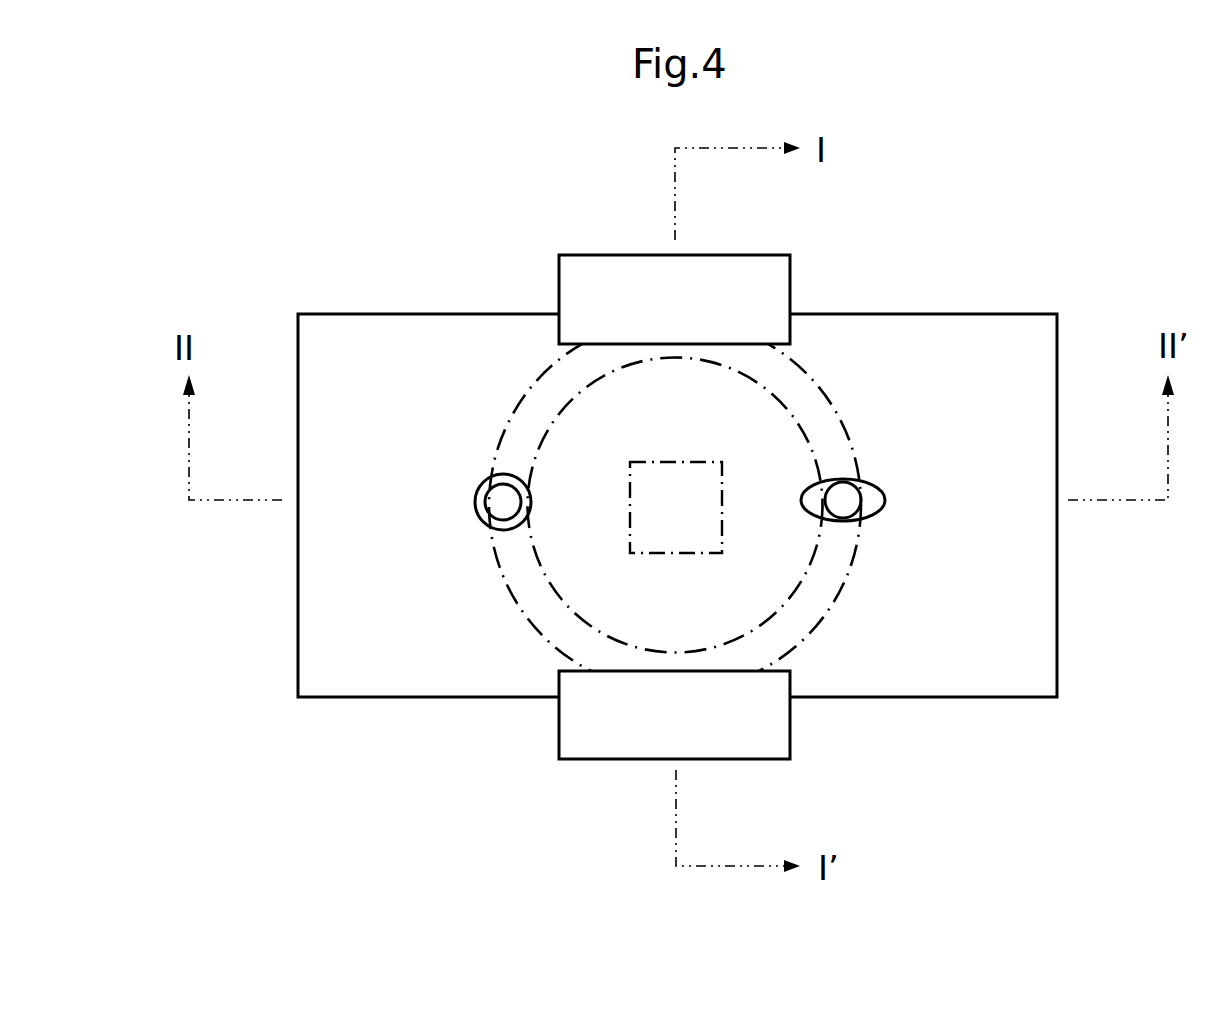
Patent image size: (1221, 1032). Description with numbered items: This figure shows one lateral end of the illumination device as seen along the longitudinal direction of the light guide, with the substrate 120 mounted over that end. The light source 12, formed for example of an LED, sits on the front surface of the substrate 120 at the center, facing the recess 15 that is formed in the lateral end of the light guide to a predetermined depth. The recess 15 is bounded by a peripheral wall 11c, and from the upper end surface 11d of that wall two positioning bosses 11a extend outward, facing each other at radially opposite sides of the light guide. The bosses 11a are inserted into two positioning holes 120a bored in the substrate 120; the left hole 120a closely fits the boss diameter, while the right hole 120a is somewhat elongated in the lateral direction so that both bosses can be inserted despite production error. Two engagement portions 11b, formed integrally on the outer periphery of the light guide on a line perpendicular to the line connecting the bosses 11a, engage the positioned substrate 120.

The substrate 120 is at (1012, 640).
The positioning holes 120a is at (487, 527).
The positioning bosses 11a is at (500, 500).
The engagement portions 11b is at (592, 256).
The peripheral wall 11c is at (858, 550).
The upper end surface 11d is at (520, 615).
The light source 12 is at (660, 470).
The recess 15 is at (753, 553).